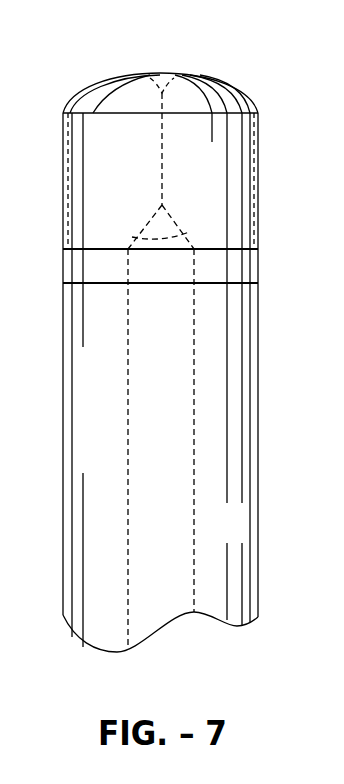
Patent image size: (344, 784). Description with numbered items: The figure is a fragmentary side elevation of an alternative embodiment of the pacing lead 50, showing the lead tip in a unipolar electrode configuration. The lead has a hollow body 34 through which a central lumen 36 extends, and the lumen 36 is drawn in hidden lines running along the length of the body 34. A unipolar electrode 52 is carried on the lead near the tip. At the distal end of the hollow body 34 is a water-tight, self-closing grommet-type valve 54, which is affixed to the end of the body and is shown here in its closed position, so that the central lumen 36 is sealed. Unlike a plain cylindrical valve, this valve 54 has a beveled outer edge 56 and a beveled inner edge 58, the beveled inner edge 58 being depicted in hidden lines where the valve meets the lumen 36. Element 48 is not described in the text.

The beveled outer edge 56 is at (120, 70).
The grommet-type valve 54 is at (225, 100).
The upper tubular section 48 is at (257, 181).
The unipolar electrode 52 is at (58, 252).
The pacing lead 50 is at (271, 382).
The hollow body 34 is at (245, 432).
The central lumen 36 is at (195, 557).
The beveled inner edge 58 is at (187, 229).